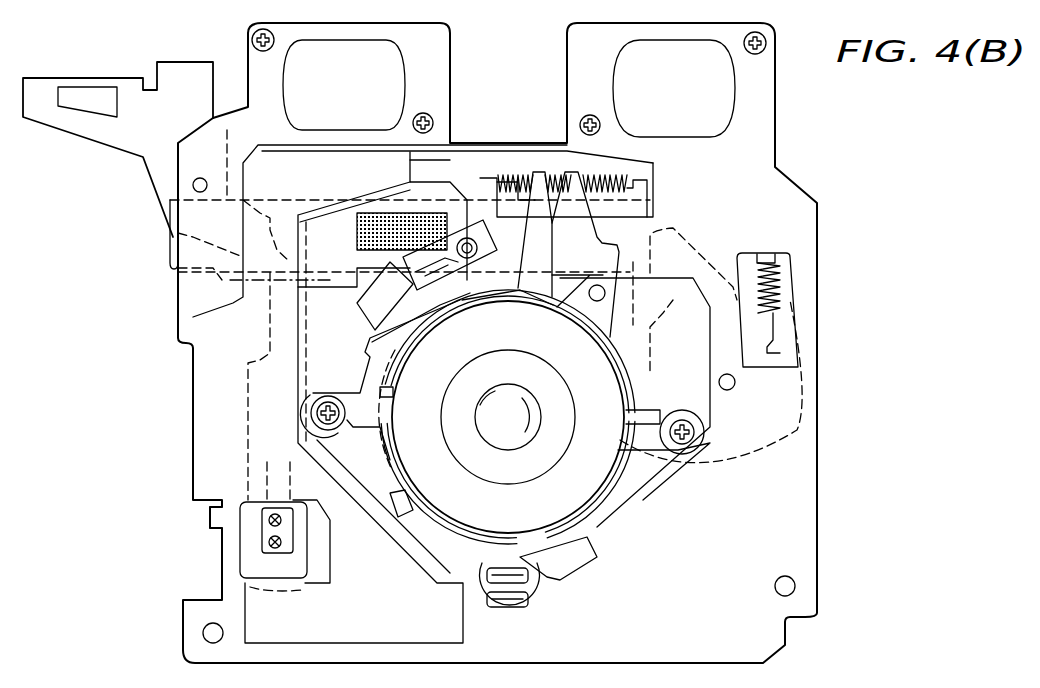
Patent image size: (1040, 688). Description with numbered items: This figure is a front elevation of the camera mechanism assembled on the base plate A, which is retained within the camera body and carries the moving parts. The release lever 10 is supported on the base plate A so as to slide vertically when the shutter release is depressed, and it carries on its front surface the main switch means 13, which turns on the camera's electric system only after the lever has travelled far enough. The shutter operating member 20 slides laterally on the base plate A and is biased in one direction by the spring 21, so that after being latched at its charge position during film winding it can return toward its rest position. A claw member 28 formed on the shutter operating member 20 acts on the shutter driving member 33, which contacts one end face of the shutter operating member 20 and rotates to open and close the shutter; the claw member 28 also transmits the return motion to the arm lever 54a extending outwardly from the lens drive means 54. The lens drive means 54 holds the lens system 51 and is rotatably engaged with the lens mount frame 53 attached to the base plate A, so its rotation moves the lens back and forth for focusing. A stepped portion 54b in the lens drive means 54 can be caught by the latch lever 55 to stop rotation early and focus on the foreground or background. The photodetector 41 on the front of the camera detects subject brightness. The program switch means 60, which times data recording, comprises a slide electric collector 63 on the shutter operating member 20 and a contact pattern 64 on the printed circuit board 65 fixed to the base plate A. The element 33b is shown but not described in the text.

The base plate A is at (783, 497).
The release lever 10 is at (157, 133).
The shutter operating member 20 is at (170, 253).
The program switch means 60 is at (376, 155).
The slide electric collector 63 is at (430, 214).
The contact pattern 64 is at (350, 222).
The printed circuit board 65 is at (438, 163).
The spring 21 is at (617, 175).
The claw member 28 is at (525, 192).
The arm lever 54a is at (572, 180).
The stepped portion 54b is at (372, 342).
The lens drive means 54 is at (630, 477).
The latch lever 55 is at (357, 306).
The lens system 51 is at (521, 430).
The lens mount frame 53 is at (613, 513).
The photodetector 41 is at (520, 609).
The main switch means 13 is at (267, 533).
The shutter driving member 33 is at (787, 360).
The coil spring 33b is at (777, 283).